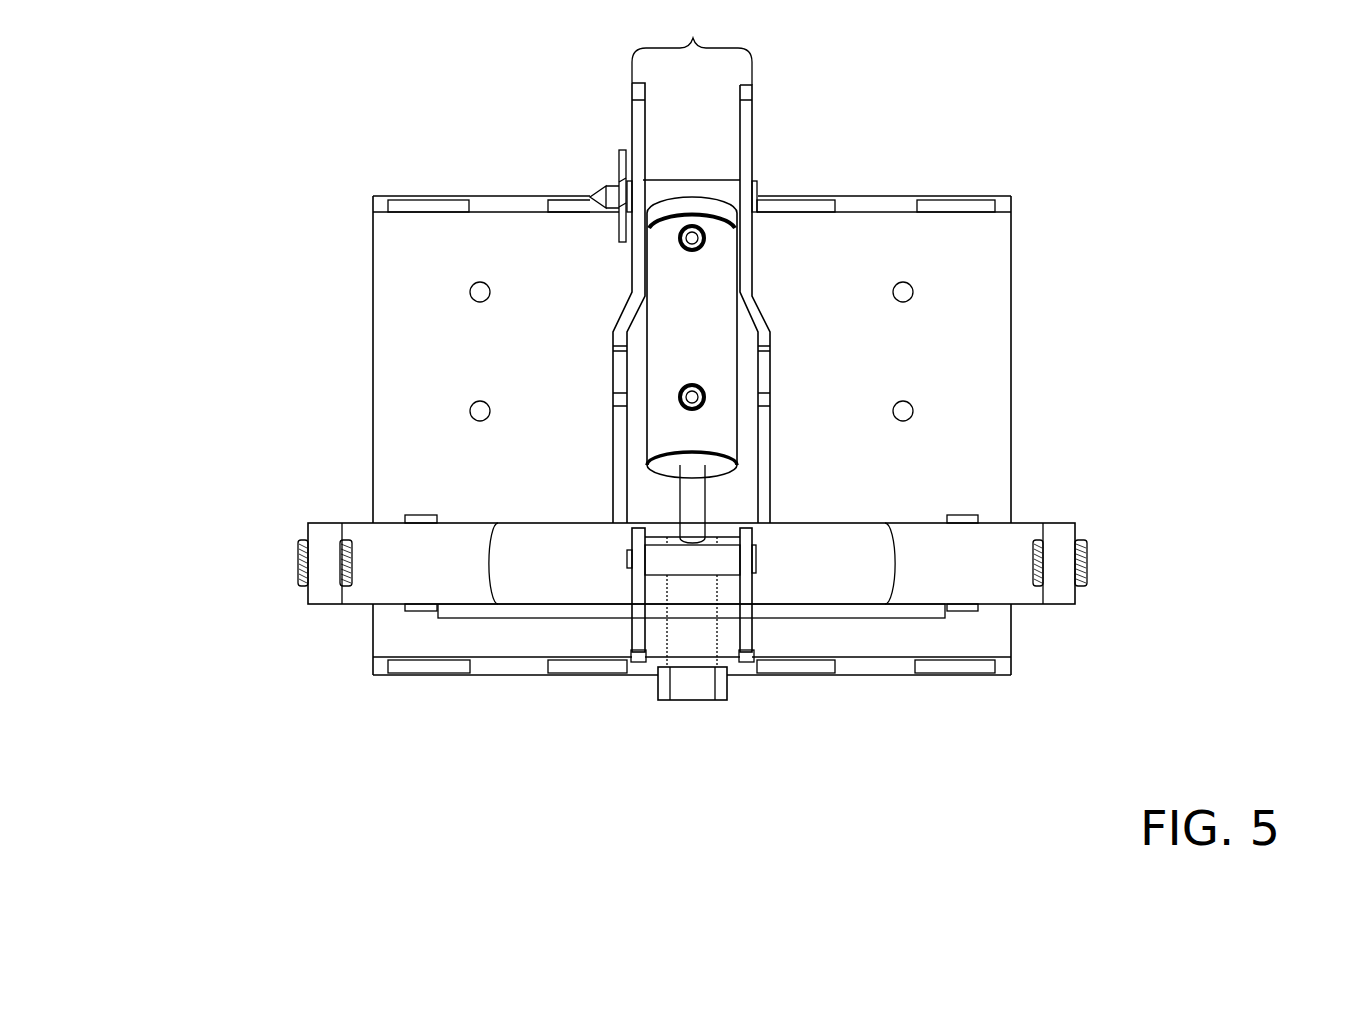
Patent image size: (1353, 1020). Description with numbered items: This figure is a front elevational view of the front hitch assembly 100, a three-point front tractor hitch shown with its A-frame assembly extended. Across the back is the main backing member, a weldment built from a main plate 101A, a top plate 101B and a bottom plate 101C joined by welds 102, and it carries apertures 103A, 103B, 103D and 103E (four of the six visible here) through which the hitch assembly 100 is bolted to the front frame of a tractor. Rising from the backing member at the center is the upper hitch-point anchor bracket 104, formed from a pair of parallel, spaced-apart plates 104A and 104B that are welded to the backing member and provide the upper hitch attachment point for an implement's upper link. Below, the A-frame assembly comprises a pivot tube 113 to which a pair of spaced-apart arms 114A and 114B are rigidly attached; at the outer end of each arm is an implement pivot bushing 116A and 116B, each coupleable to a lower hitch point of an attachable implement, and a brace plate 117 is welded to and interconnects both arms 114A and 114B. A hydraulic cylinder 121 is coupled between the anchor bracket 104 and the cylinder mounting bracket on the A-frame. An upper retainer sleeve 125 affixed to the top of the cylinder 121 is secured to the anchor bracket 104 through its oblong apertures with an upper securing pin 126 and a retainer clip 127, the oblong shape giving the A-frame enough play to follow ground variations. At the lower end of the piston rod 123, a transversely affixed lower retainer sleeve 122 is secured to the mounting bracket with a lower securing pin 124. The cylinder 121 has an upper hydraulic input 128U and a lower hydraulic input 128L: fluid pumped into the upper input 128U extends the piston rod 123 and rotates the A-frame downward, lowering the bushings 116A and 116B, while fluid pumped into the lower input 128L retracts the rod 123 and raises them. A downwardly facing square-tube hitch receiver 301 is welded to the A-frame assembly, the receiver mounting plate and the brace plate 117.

The front hitch assembly 100 is at (345, 123).
The main plate 101A is at (443, 347).
The top plate 101B is at (508, 202).
The bottom plate 101C is at (508, 668).
The welds 102 is at (415, 205).
The aperture 103A is at (465, 288).
The aperture 103B is at (465, 407).
The aperture 103D is at (918, 290).
The aperture 103E is at (918, 406).
The upper hitch-point anchor bracket 104 is at (693, 38).
The spaced-apart plate 104A is at (638, 112).
The spaced-apart plate 104B is at (747, 112).
The pivot tube 113 is at (822, 548).
The arm 114A is at (373, 568).
The arm 114B is at (1012, 567).
The implement pivot bushing 116A is at (300, 560).
The implement pivot bushing 116B is at (1083, 560).
The brace plate 117 is at (478, 610).
The hydraulic cylinder 121 is at (710, 283).
The lower retainer sleeve 122 is at (730, 558).
The piston rod 123 is at (693, 515).
The lower securing pin 124 is at (627, 558).
The upper retainer sleeve 125 is at (662, 188).
The upper securing pin 126 is at (604, 198).
The retainer clip 127 is at (620, 175).
The upper hydraulic input 128U is at (708, 238).
The lower hydraulic input 128L is at (706, 396).
The square-tube hitch receiver 301 is at (693, 683).